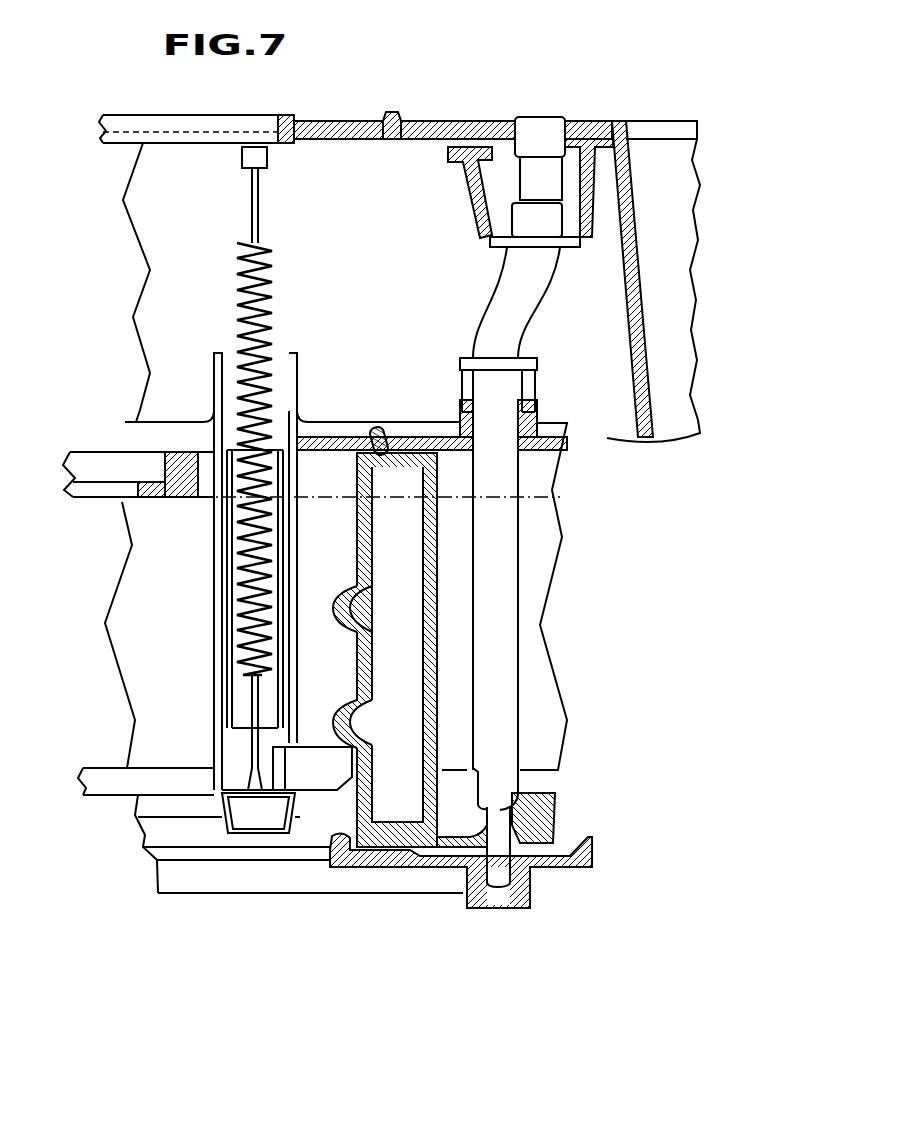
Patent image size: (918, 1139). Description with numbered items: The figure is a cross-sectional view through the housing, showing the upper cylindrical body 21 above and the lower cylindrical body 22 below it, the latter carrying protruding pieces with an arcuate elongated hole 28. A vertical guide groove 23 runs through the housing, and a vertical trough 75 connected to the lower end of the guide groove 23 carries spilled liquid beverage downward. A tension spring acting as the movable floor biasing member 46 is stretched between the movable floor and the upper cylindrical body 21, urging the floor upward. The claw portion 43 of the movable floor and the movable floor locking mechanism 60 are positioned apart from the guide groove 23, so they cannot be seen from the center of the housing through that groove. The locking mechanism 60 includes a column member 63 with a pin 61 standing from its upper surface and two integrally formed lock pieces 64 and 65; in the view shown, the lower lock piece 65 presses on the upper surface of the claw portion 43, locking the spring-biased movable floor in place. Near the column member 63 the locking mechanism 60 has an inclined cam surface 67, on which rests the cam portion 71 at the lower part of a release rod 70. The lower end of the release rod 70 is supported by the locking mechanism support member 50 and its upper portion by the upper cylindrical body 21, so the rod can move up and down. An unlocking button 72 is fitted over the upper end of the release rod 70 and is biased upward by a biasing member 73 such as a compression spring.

The upper cylindrical body 21 is at (645, 285).
The lower cylindrical body 22 is at (540, 498).
The guide groove 23 is at (240, 705).
The arcuate elongated hole 28 is at (400, 437).
The claw portion 43 is at (320, 775).
The movable floor biasing member 46 is at (237, 310).
The locking mechanism support member 50 is at (555, 868).
The movable floor locking mechanism 60 is at (558, 813).
The pin 61 is at (379, 428).
The column member 63 is at (435, 565).
The lock piece 64 is at (345, 600).
The lock piece 65 is at (355, 715).
The cam surface 67 is at (462, 827).
The release rod 70 is at (500, 640).
The cam portion 71 is at (512, 800).
The unlocking button 72 is at (536, 117).
The biasing member 73 is at (538, 378).
The vertical trough 75 is at (262, 818).